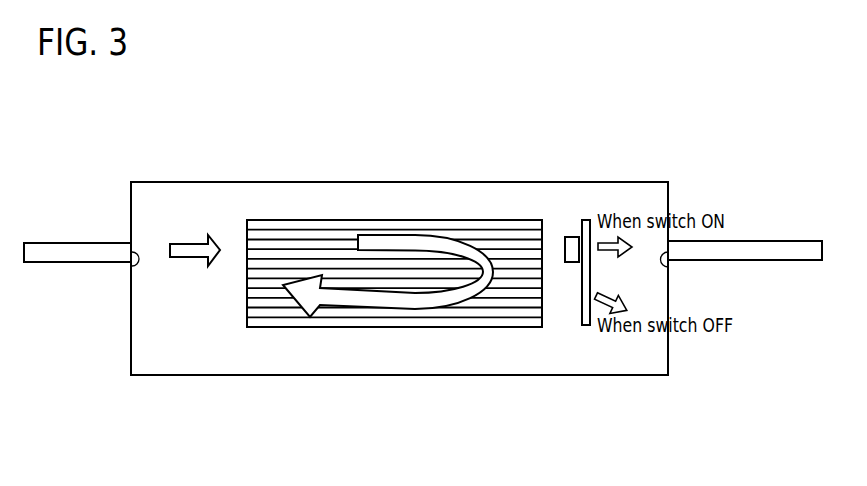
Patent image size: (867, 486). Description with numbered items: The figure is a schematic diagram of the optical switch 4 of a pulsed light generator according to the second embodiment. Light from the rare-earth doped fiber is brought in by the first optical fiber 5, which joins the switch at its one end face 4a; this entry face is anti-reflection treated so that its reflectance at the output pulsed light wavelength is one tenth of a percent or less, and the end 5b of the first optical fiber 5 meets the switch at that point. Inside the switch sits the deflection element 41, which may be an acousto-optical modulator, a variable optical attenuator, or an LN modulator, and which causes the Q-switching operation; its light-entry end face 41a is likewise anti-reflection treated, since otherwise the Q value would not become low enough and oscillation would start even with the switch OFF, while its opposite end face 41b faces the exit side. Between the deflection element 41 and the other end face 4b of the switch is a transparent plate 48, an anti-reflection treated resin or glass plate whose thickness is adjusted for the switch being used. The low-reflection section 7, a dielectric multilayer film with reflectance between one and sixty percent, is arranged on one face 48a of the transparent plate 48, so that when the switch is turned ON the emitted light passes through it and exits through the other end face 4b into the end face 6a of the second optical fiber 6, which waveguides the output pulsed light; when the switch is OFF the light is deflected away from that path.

The optical switch 4 is at (406, 181).
The one end face of the optical switch 4a is at (131, 205).
The other end face of the optical switch 4b is at (668, 362).
The first optical fiber 5 is at (55, 253).
The inlet pipe opening 5b is at (132, 264).
The second optical fiber 6 is at (780, 247).
The end face of the second optical fiber 6a is at (668, 268).
The low-reflection section 7 is at (572, 237).
The deflection element 41 is at (405, 320).
The end face of the deflection element 41a is at (248, 236).
The outlet end of heat exchanger 41b is at (545, 237).
The transparent plate 48 is at (587, 220).
The one face of the transparent plate 48a is at (578, 311).